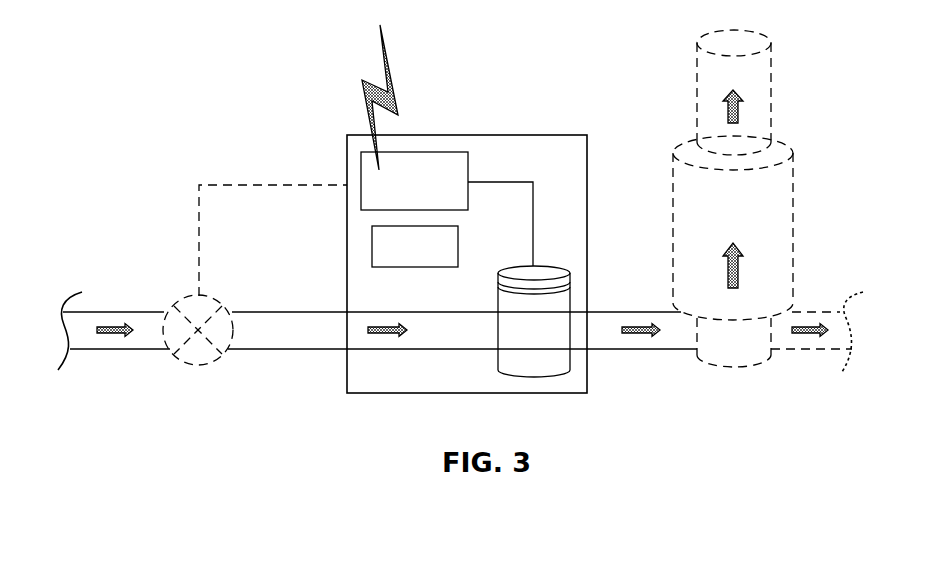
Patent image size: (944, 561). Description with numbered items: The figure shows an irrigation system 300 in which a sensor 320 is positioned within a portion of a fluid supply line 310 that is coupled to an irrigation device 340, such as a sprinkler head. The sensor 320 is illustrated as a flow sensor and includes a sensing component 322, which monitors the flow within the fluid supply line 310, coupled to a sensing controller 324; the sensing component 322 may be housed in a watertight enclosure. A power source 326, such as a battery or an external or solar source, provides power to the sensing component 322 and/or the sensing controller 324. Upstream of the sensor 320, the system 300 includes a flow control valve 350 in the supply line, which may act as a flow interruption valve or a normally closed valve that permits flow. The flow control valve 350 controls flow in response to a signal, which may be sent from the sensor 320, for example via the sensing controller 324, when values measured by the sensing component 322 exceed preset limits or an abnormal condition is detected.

The system 300 is at (460, 268).
The fluid supply line 310 is at (460, 332).
The sensor 320 is at (467, 209).
The sensing component 322 is at (534, 321).
The sensing controller 324 is at (447, 145).
The power source 326 is at (415, 246).
The irrigation device 340 is at (733, 198).
The flow control valve 350 is at (190, 296).